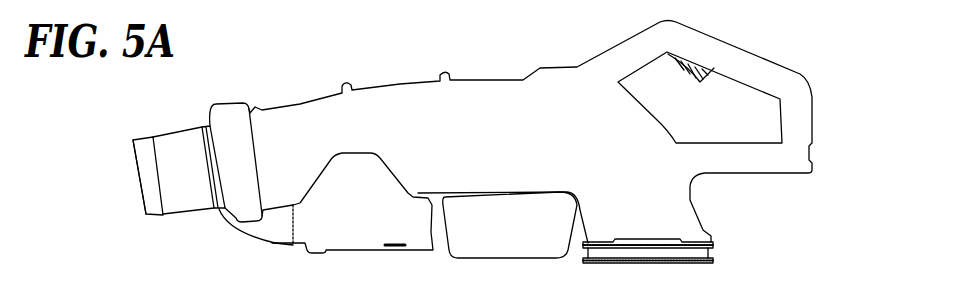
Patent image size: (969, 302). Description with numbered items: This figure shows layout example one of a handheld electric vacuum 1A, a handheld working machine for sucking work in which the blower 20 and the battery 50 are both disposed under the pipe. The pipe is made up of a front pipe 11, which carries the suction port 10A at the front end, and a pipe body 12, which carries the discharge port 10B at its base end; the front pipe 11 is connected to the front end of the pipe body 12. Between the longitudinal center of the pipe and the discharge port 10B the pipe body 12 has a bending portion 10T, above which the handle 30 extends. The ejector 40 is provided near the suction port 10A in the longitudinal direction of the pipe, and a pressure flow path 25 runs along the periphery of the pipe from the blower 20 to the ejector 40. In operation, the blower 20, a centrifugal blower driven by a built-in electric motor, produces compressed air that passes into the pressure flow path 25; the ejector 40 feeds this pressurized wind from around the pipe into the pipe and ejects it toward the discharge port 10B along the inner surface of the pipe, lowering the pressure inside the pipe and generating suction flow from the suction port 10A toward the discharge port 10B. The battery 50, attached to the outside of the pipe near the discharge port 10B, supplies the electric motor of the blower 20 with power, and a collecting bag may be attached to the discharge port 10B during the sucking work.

The handheld electric vacuum 1A is at (569, 123).
The front pipe 11 is at (162, 160).
The pipe body 12 is at (389, 82).
The suction port 10A is at (144, 210).
The discharge port 10B is at (682, 265).
The bending portion 10T is at (660, 108).
The blower 20 is at (362, 251).
The pressure flow path 25 is at (249, 240).
The handle 30 is at (746, 42).
The ejector 40 is at (225, 102).
The battery 50 is at (507, 260).